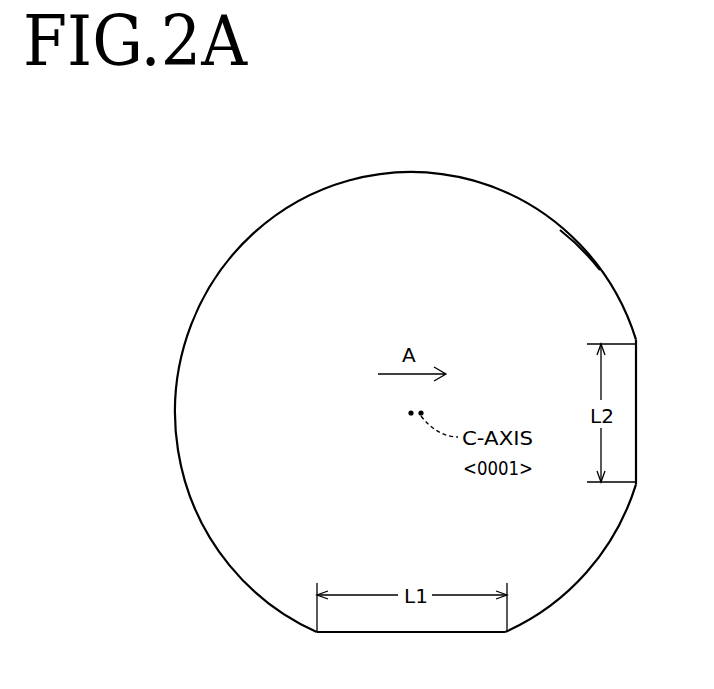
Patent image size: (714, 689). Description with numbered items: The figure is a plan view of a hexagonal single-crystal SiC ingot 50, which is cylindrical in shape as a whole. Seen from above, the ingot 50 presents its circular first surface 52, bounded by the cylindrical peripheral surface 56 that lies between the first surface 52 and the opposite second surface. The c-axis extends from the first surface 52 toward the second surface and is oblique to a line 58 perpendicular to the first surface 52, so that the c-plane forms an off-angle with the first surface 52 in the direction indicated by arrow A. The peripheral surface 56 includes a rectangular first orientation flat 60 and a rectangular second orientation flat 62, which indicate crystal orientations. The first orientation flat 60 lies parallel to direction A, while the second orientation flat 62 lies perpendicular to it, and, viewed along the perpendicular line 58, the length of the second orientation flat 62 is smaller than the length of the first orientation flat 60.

The single-crystal SiC ingot 50 is at (394, 388).
The first surface 52 is at (488, 220).
The peripheral surface 56 is at (585, 249).
The perpendicular line 58 is at (411, 416).
The first orientation flat 60 is at (455, 633).
The second orientation flat 62 is at (637, 412).